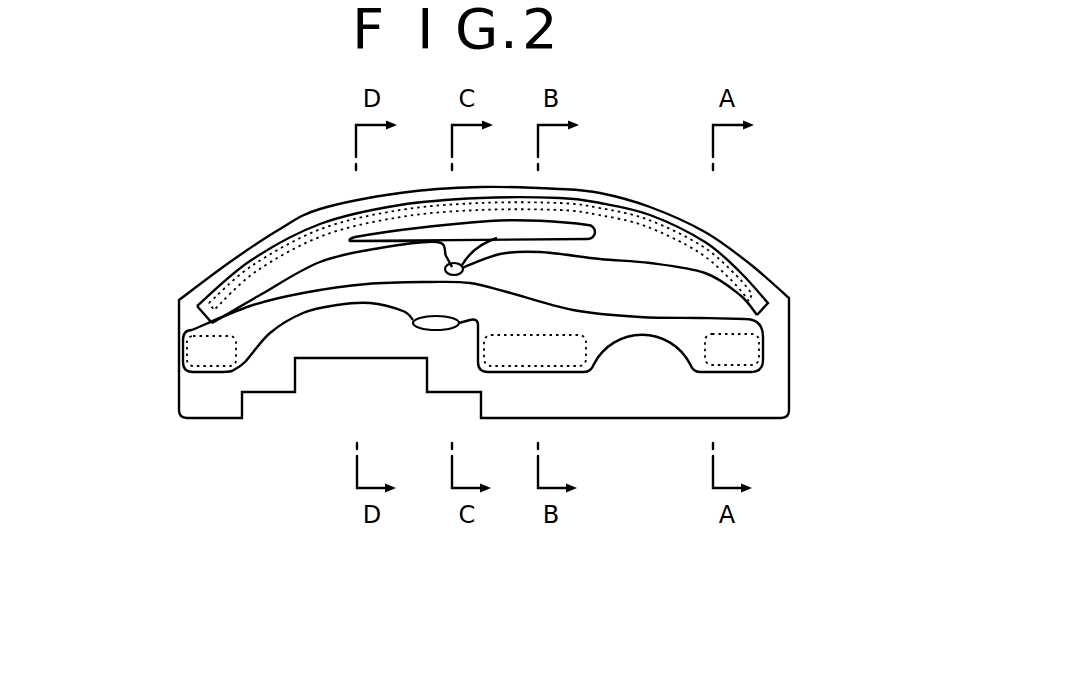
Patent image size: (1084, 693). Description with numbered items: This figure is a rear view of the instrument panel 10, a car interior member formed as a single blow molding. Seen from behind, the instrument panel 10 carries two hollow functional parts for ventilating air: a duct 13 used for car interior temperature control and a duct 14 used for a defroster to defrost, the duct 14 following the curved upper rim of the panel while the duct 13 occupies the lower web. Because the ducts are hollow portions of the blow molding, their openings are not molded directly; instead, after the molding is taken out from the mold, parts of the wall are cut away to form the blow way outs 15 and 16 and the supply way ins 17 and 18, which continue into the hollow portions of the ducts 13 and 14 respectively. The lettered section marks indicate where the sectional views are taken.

The instrument panel 10 is at (826, 274).
The duct 13 is at (308, 312).
The duct 14 is at (315, 250).
The blow way out 15 is at (760, 353).
The blow way out 16 is at (720, 241).
The supply way in 17 is at (424, 327).
The supply way in 18 is at (458, 276).